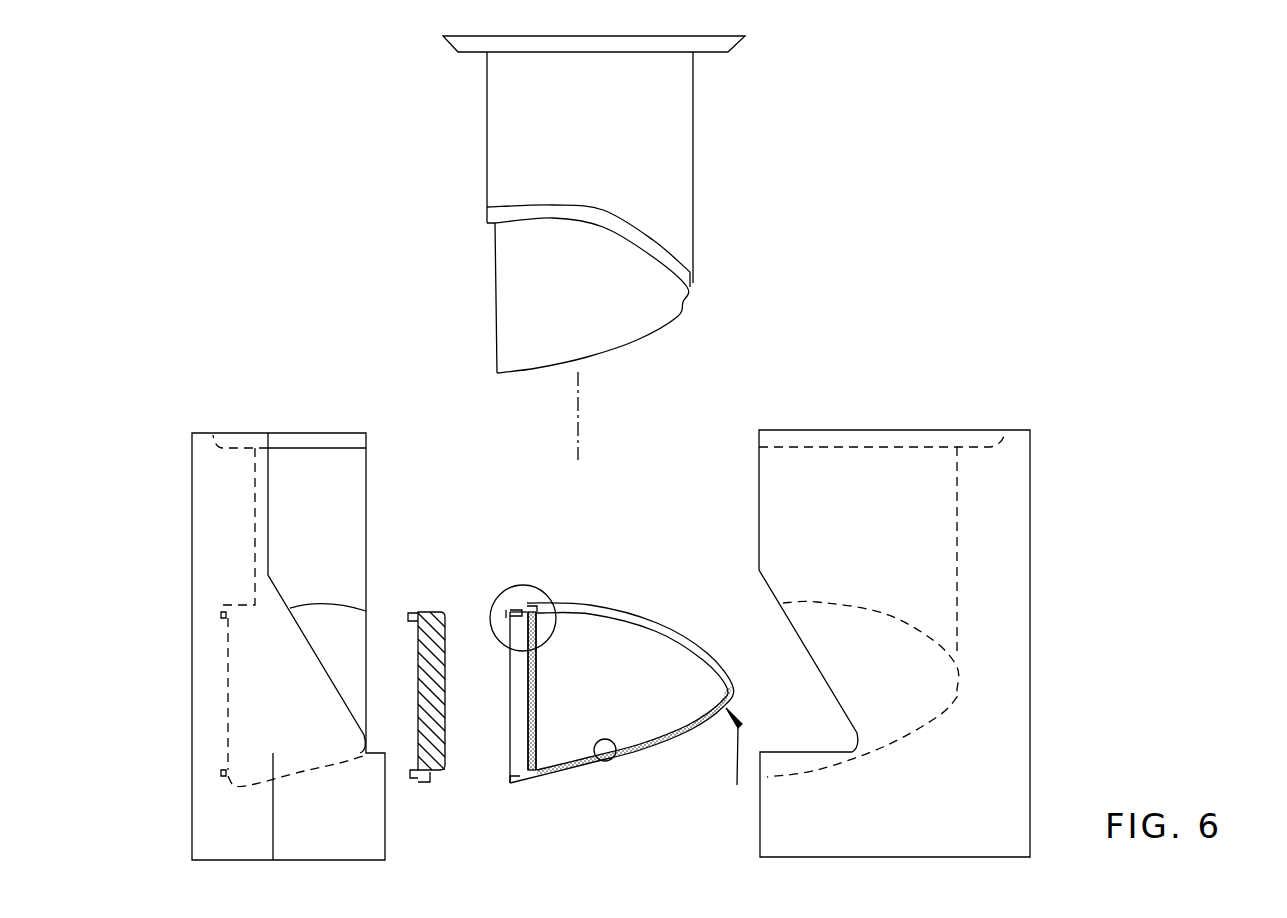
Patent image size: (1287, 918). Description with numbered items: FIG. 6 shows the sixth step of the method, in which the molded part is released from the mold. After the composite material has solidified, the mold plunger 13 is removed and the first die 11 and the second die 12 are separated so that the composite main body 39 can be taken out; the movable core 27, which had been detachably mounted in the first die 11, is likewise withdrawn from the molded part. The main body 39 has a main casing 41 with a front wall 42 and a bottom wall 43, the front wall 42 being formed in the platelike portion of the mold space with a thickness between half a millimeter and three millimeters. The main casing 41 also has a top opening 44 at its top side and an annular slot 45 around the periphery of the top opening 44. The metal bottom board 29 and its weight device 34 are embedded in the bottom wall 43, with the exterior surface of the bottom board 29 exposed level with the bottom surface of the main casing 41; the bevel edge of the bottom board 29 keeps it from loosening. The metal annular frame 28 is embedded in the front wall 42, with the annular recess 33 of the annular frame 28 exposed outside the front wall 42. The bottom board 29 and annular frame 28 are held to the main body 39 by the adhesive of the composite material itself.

The first die 11 is at (292, 433).
The second die 12 is at (893, 430).
The mold plunger 13 is at (693, 176).
The movable core 27 is at (429, 786).
The annular frame 28 is at (511, 604).
The bottom board 29 is at (657, 752).
The annular recess 33 is at (506, 613).
The weight device 34 is at (691, 740).
The composite main body 39 is at (590, 668).
The main casing 41 is at (731, 765).
The front wall 42 is at (536, 693).
The bottom wall 43 is at (592, 772).
The top opening 44 is at (633, 622).
The annular slot 45 is at (534, 607).